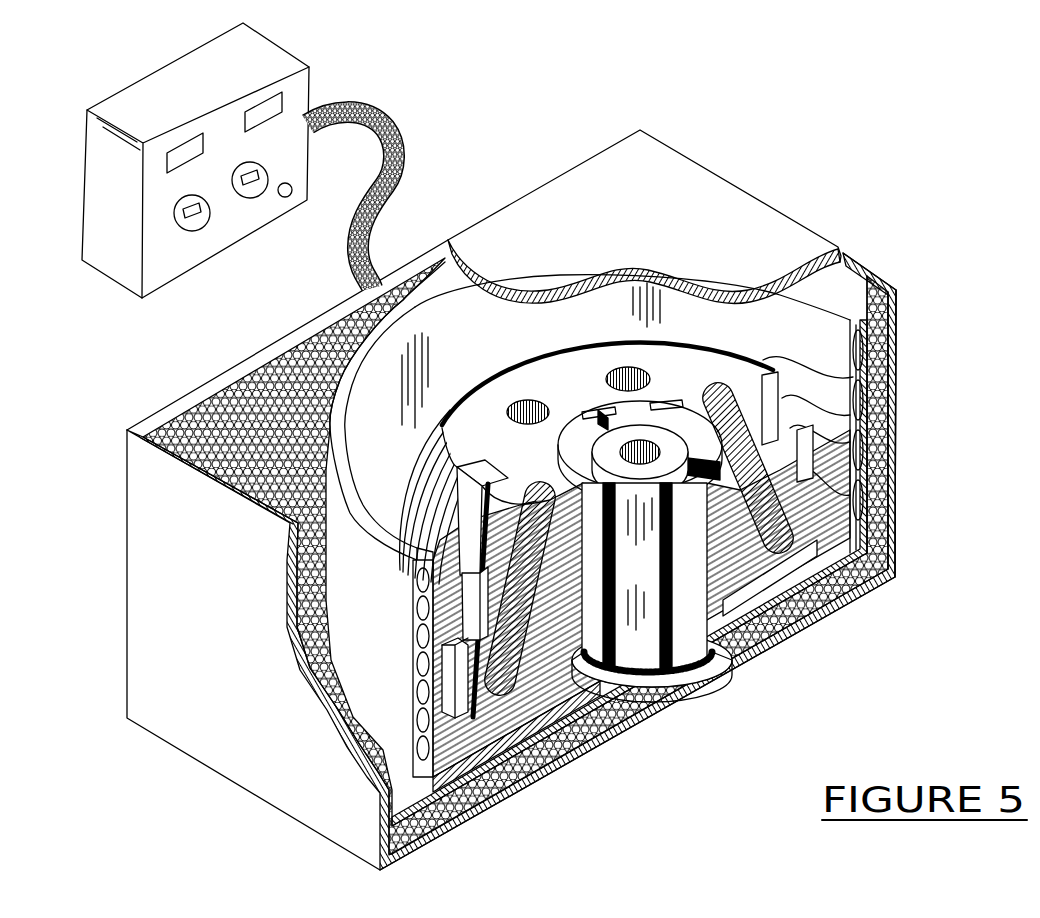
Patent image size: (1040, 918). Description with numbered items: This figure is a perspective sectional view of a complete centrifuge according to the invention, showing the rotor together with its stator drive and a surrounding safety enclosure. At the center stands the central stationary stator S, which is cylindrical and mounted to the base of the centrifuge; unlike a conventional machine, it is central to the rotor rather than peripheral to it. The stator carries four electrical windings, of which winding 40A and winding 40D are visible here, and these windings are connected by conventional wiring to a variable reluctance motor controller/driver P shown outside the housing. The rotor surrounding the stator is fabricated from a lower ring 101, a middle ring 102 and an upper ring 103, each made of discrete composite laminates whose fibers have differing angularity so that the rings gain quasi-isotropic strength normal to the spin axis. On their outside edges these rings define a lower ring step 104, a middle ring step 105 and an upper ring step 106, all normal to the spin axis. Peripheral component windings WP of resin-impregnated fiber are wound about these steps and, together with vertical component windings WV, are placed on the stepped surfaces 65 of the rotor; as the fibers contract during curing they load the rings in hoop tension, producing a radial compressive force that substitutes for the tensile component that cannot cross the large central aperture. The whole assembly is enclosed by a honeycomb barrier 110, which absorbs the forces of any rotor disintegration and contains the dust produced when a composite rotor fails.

The variable reluctance motor controller/driver P is at (130, 243).
The honeycomb barrier 110 is at (267, 417).
The electrical winding 40A is at (562, 420).
The vertical component windings WV is at (502, 503).
The peripheral component windings WP is at (456, 614).
The stepped surfaces 65 is at (413, 658).
The central stationary stator S is at (698, 586).
The electrical winding 40D is at (645, 727).
The lower ring 101 is at (893, 533).
The middle ring 102 is at (870, 463).
The upper ring 103 is at (898, 380).
The lower ring step 104 is at (897, 510).
The middle ring step 105 is at (898, 427).
The upper ring step 106 is at (897, 343).